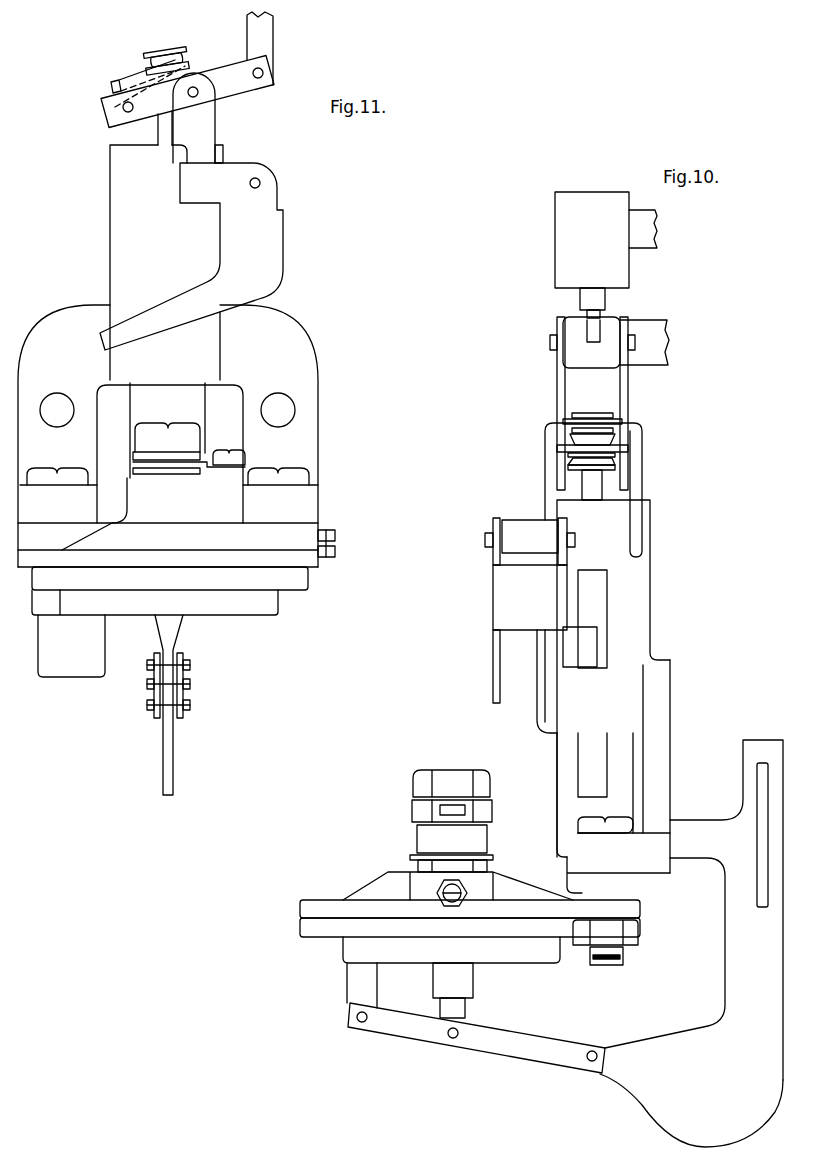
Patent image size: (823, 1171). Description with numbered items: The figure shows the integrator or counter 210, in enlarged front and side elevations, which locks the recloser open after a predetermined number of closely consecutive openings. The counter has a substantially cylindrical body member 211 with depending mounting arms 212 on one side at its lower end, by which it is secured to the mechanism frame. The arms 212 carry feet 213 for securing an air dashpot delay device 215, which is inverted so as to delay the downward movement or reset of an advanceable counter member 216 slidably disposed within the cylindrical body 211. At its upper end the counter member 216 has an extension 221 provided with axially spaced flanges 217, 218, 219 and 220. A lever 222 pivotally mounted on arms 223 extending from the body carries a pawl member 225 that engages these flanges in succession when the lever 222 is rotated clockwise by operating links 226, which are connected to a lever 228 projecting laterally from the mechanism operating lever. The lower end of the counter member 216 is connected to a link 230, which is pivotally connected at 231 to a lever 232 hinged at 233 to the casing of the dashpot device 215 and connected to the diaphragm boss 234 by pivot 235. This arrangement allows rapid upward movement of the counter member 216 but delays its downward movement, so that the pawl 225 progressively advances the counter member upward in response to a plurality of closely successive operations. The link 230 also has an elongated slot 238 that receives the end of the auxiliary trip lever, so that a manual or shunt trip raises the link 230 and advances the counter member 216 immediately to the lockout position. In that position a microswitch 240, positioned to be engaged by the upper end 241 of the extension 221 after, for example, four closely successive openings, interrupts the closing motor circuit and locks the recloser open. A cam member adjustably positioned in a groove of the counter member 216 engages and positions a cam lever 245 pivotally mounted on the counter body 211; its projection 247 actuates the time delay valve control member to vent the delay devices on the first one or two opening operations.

In FIG. 11, the integrator or counter 210 is at (82, 285).
In FIG. 10, the integrator or counter 210 is at (705, 540).
In FIG. 11, the cylindrical body member 211 is at (110, 218).
In FIG. 10, the cylindrical body member 211 is at (645, 581).
In FIG. 11, the mounting arms 212 is at (56, 326).
In FIG. 10, the mounting arms 212 is at (670, 693).
In FIG. 11, the feet 213 is at (318, 500).
In FIG. 10, the feet 213 is at (567, 870).
In FIG. 11, the air dashpot delay device 215 is at (309, 578).
In FIG. 10, the air dashpot delay device 215 is at (363, 890).
In FIG. 11, the counter member 216 is at (172, 430).
In FIG. 10, the counter member 216 is at (556, 758).
In FIG. 11, the flange 217 is at (182, 56).
In FIG. 11, the flange 218 is at (182, 69).
In FIG. 10, the flange 219 is at (630, 447).
In FIG. 10, the flange 220 is at (613, 462).
In FIG. 11, the extension 221 is at (157, 134).
In FIG. 10, the extension 221 is at (605, 489).
In FIG. 11, the lever 222 is at (233, 96).
In FIG. 11, the arms 223 is at (216, 129).
In FIG. 10, the arms 223 is at (545, 472).
In FIG. 11, the pawl member 225 is at (121, 79).
In FIG. 11, the operating links 226 is at (274, 38).
In FIG. 10, the operating links 226 is at (558, 386).
In FIG. 10, the lever 228 is at (637, 318).
In FIG. 11, the link 230 is at (173, 760).
In FIG. 10, the link 230 is at (724, 950).
In FIG. 11, the pivot 231 is at (191, 705).
In FIG. 10, the pivot 231 is at (596, 1050).
In FIG. 10, the lever 232 is at (518, 1035).
In FIG. 11, the hinge 233 is at (190, 665).
In FIG. 10, the hinge 233 is at (348, 1022).
In FIG. 10, the diaphragm boss 234 is at (473, 980).
In FIG. 11, the pivot 235 is at (191, 685).
In FIG. 10, the pivot 235 is at (453, 1040).
In FIG. 10, the elongated slot 238 is at (756, 790).
In FIG. 10, the microswitch 240 is at (555, 237).
In FIG. 11, the upper end 241 is at (166, 51).
In FIG. 10, the upper end 241 is at (600, 407).
In FIG. 10, the cam lever 245 is at (597, 630).
In FIG. 11, the projection 247 is at (99, 345).
In FIG. 10, the projection 247 is at (493, 694).